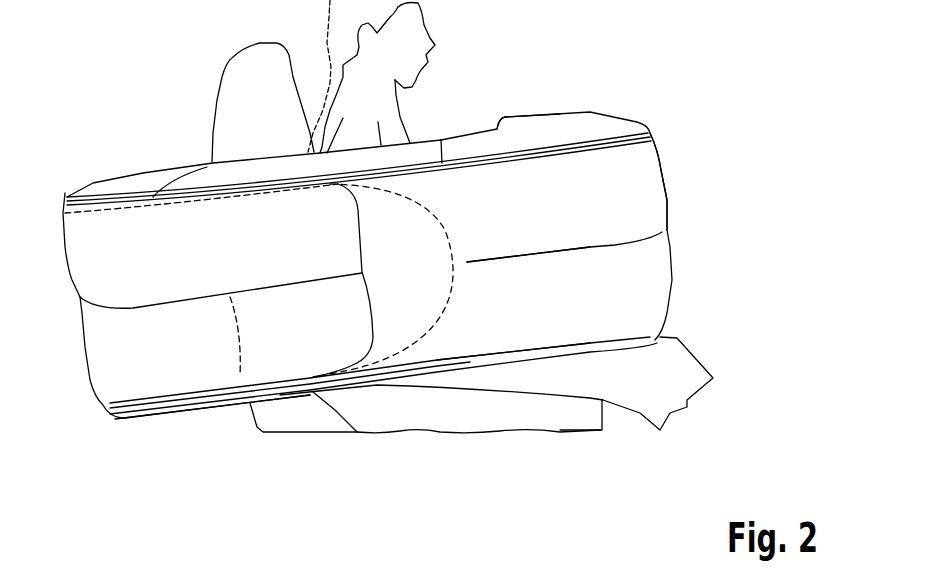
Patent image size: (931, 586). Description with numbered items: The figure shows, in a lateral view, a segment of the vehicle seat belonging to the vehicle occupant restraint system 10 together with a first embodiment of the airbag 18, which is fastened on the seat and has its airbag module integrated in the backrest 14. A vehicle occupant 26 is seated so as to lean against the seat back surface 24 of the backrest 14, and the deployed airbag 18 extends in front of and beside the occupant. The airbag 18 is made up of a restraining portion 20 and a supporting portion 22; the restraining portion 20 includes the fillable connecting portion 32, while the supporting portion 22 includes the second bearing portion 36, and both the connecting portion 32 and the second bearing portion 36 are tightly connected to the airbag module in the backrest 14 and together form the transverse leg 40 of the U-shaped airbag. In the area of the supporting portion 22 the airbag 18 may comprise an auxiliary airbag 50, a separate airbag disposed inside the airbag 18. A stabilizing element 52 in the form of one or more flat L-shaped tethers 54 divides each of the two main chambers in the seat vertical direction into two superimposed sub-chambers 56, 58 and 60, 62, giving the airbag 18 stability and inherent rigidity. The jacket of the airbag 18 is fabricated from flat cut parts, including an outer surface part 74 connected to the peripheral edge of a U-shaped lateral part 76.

The vehicle occupant restraint system 10 is at (126, 73).
The backrest 14 is at (245, 82).
The airbag 18 is at (670, 84).
The restraining portion 20 is at (582, 88).
The supporting portion 22 is at (157, 451).
The seat back surface 24 is at (308, 82).
The vehicle occupant 26 is at (402, 23).
The connecting portion 32 is at (477, 149).
The second bearing portion 36 is at (222, 400).
The transverse leg 40 is at (392, 446).
The auxiliary airbag 50 is at (423, 333).
The stabilizing element 52 is at (615, 245).
The tether 54 is at (240, 375).
The sub-chamber 56 is at (567, 306).
The sub-chamber 58 is at (537, 219).
The sub-chamber 60 is at (205, 362).
The sub-chamber 62 is at (202, 267).
The outer surface part 74 is at (577, 197).
The lateral part 76 is at (538, 133).